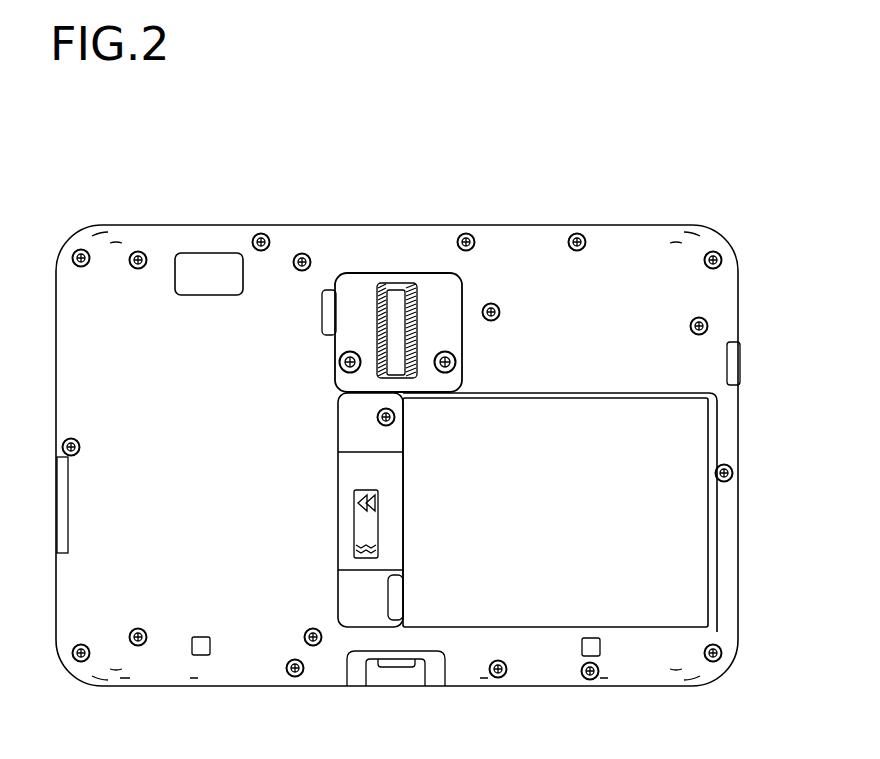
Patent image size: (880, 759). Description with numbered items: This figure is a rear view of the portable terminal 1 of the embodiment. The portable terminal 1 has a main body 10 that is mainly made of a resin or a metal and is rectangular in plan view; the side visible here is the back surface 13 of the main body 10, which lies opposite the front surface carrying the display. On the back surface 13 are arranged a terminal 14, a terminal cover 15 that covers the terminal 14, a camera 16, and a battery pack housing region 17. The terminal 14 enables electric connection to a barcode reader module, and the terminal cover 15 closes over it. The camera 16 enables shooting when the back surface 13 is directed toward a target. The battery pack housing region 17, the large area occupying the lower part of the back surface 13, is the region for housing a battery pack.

The portable terminal 1 is at (125, 203).
The main body 10 is at (276, 225).
The back surface 13 is at (620, 258).
The terminal 14 is at (382, 284).
The terminal cover 15 is at (445, 272).
The camera 16 is at (200, 262).
The battery pack housing region 17 is at (606, 597).